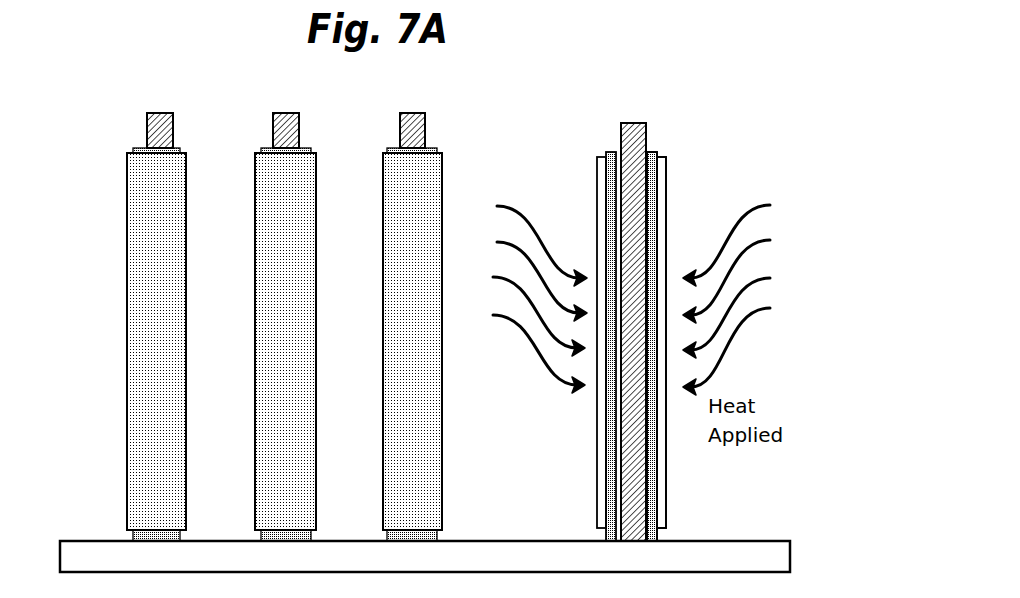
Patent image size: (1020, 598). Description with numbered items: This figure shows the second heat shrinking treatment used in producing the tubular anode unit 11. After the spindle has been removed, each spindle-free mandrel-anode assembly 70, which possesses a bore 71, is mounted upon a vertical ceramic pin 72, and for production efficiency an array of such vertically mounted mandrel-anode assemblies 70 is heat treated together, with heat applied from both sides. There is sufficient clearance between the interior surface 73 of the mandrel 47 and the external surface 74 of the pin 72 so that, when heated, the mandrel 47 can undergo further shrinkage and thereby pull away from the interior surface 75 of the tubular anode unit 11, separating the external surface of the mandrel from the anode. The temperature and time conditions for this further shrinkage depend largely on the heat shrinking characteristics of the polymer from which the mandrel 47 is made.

The tubular anode unit 11 is at (597, 470).
The mandrel-anode assembly 70 is at (597, 423).
The bore 71 is at (617, 150).
The vertical ceramic pin 72 is at (425, 122).
The interior surface of mandrel 73 is at (666, 157).
The external surface of pin 74 is at (648, 238).
The interior surface of tubular anode unit 75 is at (660, 216).
The mandrel 47 is at (437, 150).